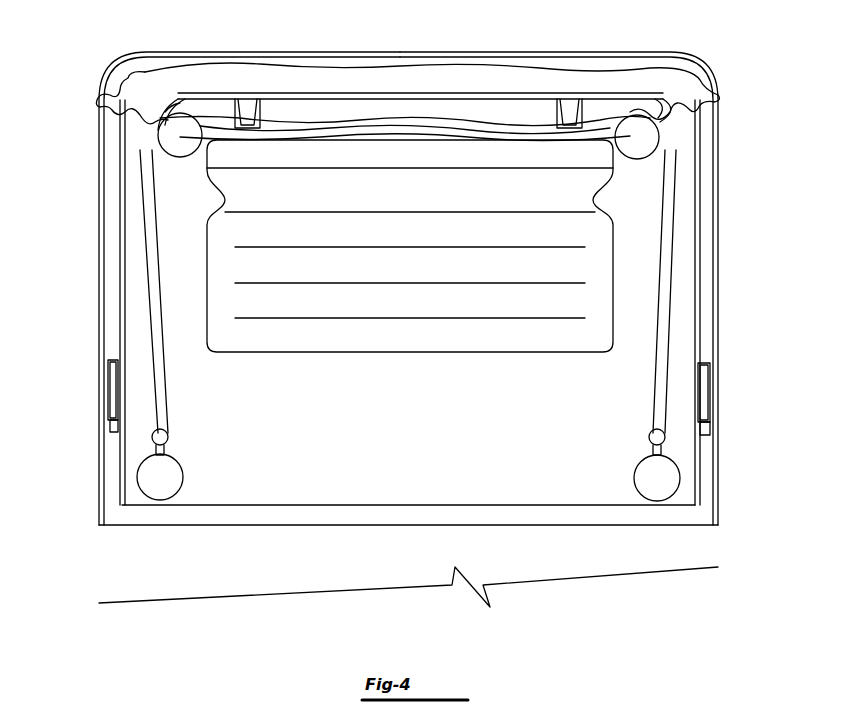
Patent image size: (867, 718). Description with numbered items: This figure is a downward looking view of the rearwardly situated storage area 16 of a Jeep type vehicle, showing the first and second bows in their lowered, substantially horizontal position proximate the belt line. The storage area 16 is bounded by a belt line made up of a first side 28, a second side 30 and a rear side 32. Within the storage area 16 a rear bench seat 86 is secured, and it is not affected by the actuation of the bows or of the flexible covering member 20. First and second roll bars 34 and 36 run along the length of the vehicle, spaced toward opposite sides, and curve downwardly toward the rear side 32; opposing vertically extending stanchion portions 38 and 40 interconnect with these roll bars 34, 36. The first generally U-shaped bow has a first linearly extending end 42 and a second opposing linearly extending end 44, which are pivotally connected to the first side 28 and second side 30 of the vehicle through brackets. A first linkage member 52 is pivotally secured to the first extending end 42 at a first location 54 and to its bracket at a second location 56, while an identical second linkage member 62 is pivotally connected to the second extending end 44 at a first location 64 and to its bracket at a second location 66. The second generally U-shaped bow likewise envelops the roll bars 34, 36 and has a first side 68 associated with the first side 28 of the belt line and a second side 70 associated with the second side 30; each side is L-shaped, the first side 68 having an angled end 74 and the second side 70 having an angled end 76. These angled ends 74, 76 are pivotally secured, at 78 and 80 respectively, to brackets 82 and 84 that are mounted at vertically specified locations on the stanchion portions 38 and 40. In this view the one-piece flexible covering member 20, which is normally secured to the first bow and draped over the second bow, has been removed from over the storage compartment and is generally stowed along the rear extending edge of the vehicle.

The storage area 16 is at (436, 404).
The flexible covering member 20 is at (277, 78).
The first side 28 is at (718, 305).
The second side 30 is at (100, 325).
The rear side 32 is at (370, 51).
The first roll bar 34 is at (645, 148).
The second roll bar 36 is at (170, 145).
The stanchion portion 38 is at (648, 478).
The stanchion portion 40 is at (172, 475).
The first linearly extending end 42 is at (700, 252).
The second linearly extending end 44 is at (105, 243).
The first linkage member 52 is at (706, 412).
The first location 54 is at (710, 370).
The second location 56 is at (708, 430).
The second linkage member 62 is at (110, 410).
The first location 64 is at (108, 368).
The second location 66 is at (110, 427).
The first side 68 is at (155, 255).
The second side 70 is at (660, 270).
The angled end 74 is at (658, 388).
The angled end 76 is at (160, 358).
The pivot 78 is at (652, 438).
The pivot 80 is at (166, 435).
The bracket 82 is at (672, 458).
The bracket 84 is at (145, 458).
The rear bench seat 86 is at (433, 273).